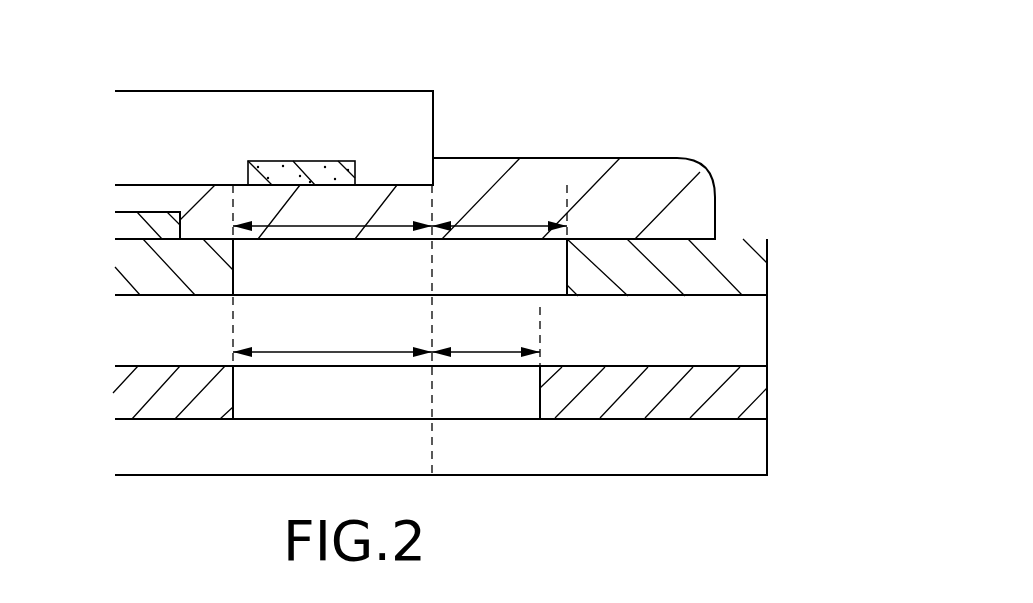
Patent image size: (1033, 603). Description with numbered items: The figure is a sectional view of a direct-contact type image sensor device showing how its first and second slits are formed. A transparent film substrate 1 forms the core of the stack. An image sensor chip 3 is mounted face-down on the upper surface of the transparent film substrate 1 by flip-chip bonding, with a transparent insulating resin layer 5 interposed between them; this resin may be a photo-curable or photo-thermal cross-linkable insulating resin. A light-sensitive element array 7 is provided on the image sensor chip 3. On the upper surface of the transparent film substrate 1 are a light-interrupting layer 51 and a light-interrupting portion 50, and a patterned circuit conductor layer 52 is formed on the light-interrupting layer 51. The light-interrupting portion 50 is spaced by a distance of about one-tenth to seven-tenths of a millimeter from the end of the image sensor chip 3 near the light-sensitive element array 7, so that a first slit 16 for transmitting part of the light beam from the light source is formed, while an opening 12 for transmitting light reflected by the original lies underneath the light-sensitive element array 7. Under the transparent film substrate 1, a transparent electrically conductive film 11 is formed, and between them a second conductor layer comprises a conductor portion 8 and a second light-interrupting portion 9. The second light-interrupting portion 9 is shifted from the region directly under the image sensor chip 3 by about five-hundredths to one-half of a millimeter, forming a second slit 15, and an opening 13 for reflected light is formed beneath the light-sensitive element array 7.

The transparent film substrate 1 is at (737, 338).
The image sensor chip 3 is at (350, 108).
The transparent insulating resin layer 5 is at (673, 183).
The light-sensitive element array 7 is at (293, 167).
The conductor portion 8 is at (162, 395).
The second light-interrupting portion 9 is at (735, 392).
The transparent electrically conductive film 11 is at (750, 450).
The opening 12 is at (332, 329).
The opening 13 is at (332, 337).
The second slit 15 is at (486, 336).
The first slit 16 is at (499, 212).
The light-interrupting portion 50 is at (738, 270).
The light-interrupting layer 51 is at (133, 277).
The patterned circuit conductor layer 52 is at (138, 222).